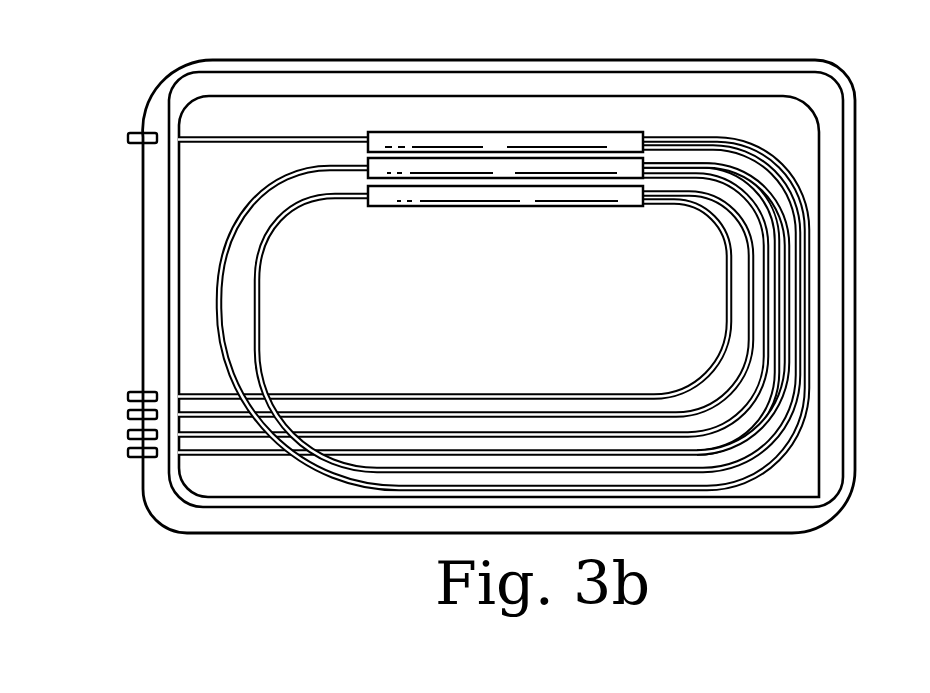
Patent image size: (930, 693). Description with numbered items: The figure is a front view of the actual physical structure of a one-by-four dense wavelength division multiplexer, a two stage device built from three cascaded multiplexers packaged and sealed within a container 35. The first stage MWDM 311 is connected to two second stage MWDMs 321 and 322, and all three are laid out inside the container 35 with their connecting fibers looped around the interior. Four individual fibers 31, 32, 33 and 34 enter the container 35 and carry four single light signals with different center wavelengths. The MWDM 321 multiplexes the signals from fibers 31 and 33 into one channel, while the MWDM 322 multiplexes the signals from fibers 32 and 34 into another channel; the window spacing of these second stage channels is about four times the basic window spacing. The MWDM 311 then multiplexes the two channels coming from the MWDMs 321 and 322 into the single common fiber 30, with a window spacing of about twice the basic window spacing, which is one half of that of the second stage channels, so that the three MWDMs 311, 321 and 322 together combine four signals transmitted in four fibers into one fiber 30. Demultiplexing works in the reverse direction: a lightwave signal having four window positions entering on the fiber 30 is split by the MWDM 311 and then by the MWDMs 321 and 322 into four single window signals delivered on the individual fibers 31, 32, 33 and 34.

The fiber 30 is at (128, 138).
The fiber 31 is at (128, 452).
The fiber 32 is at (128, 414).
The fiber 33 is at (128, 434).
The fiber 34 is at (128, 396).
The container 35 is at (294, 522).
The first stage MWDM 311 is at (428, 138).
The second stage MWDM 321 is at (500, 167).
The second stage MWDM 322 is at (583, 197).